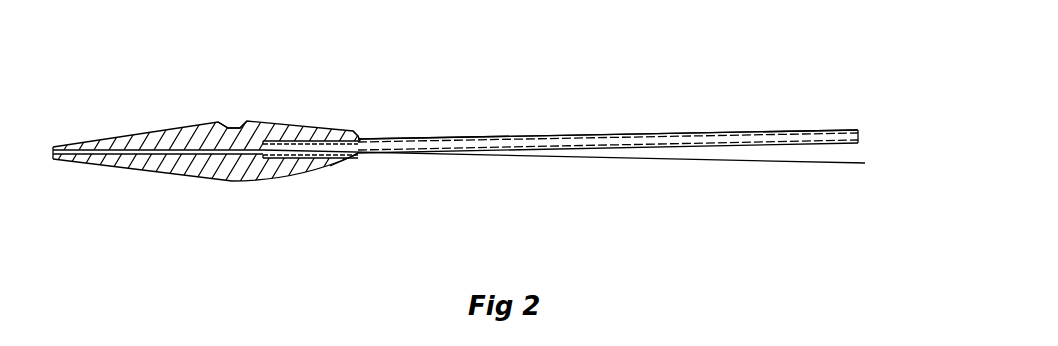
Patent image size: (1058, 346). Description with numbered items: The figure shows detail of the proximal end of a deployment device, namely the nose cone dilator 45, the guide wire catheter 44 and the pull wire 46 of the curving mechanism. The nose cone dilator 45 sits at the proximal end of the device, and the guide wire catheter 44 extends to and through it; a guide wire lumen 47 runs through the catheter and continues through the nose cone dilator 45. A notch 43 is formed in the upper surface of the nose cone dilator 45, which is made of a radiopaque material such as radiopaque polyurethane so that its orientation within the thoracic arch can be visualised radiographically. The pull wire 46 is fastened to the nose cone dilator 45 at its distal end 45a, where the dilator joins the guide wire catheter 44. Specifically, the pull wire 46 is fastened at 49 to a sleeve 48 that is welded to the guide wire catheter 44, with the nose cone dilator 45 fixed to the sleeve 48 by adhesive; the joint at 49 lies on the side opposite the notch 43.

The notch 43 is at (232, 127).
The guide wire catheter 44 is at (601, 136).
The nose cone dilator 45 is at (187, 167).
The distal end 45a is at (365, 137).
The pull wire 46 is at (723, 163).
The guide wire lumen 47 is at (170, 148).
The sleeve 48 is at (321, 140).
The fastening point 49 is at (355, 156).